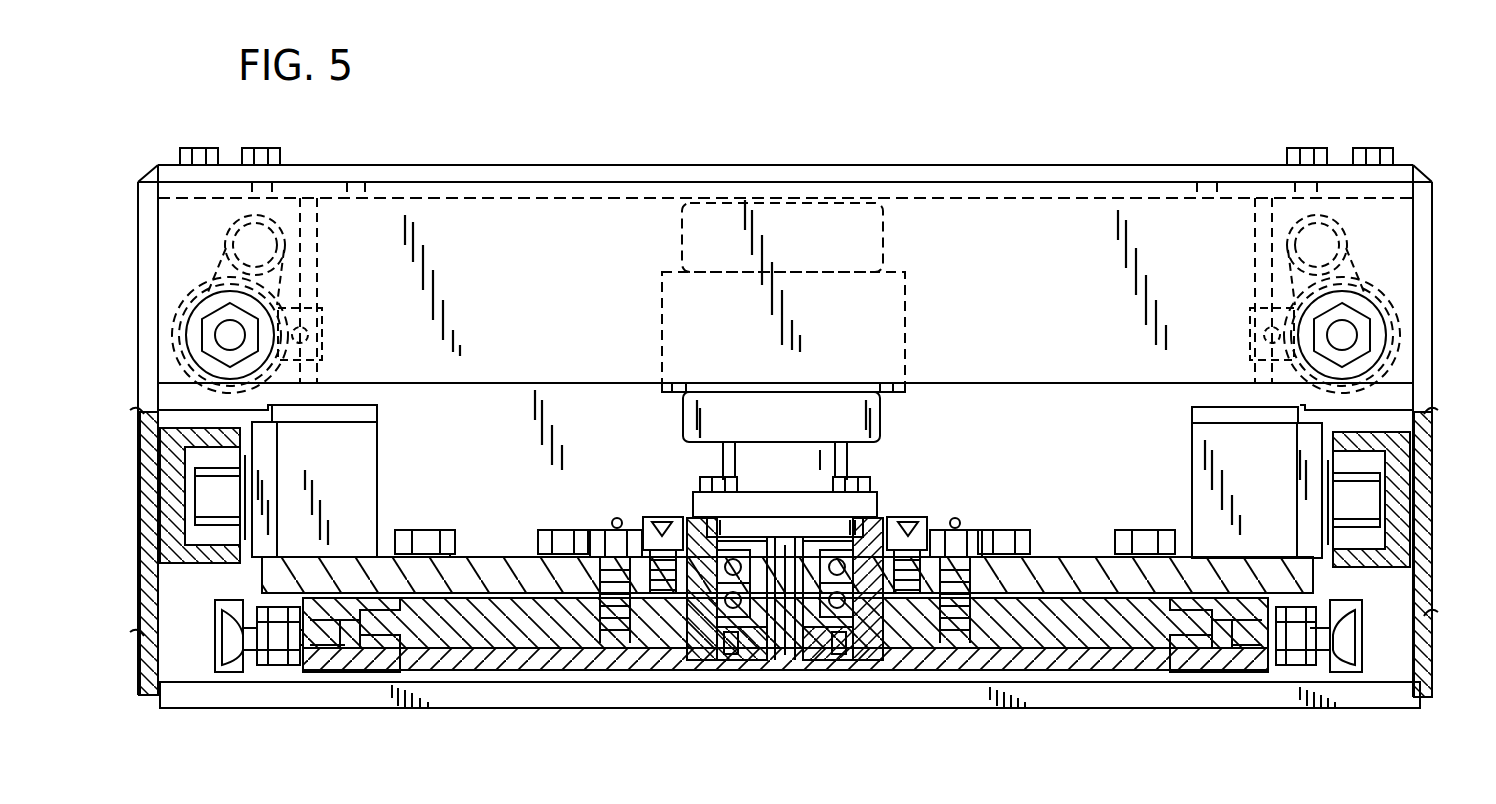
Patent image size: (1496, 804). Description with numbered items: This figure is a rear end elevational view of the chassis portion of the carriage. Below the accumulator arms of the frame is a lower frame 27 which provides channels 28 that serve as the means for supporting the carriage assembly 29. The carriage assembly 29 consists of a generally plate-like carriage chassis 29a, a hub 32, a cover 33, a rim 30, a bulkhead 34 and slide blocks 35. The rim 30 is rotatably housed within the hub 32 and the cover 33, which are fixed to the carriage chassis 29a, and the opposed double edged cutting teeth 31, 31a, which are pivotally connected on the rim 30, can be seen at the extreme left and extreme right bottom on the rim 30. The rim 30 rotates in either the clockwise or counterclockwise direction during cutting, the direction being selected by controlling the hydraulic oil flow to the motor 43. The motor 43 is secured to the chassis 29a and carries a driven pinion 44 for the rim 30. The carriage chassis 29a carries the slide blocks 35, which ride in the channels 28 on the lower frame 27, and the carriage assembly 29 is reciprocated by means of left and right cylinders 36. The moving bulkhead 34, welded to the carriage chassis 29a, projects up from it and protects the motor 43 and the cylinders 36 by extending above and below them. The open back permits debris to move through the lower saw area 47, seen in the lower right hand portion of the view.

The lower frame 27 is at (140, 468).
The channels 28 is at (232, 436).
The carriage assembly 29 is at (1170, 500).
The carriage chassis 29a is at (495, 557).
The rim 30 is at (1220, 648).
The double edged cutting tooth 31 is at (1362, 650).
The double edged cutting tooth 31a is at (1362, 612).
The hub 32 is at (1067, 640).
The cover 33 is at (1120, 665).
The bulkhead 34 is at (478, 442).
The slide blocks 35 is at (210, 560).
The cylinders 36 is at (180, 362).
The motor 43 is at (905, 328).
The driven pinion 44 is at (828, 658).
The lower saw area 47 is at (193, 677).